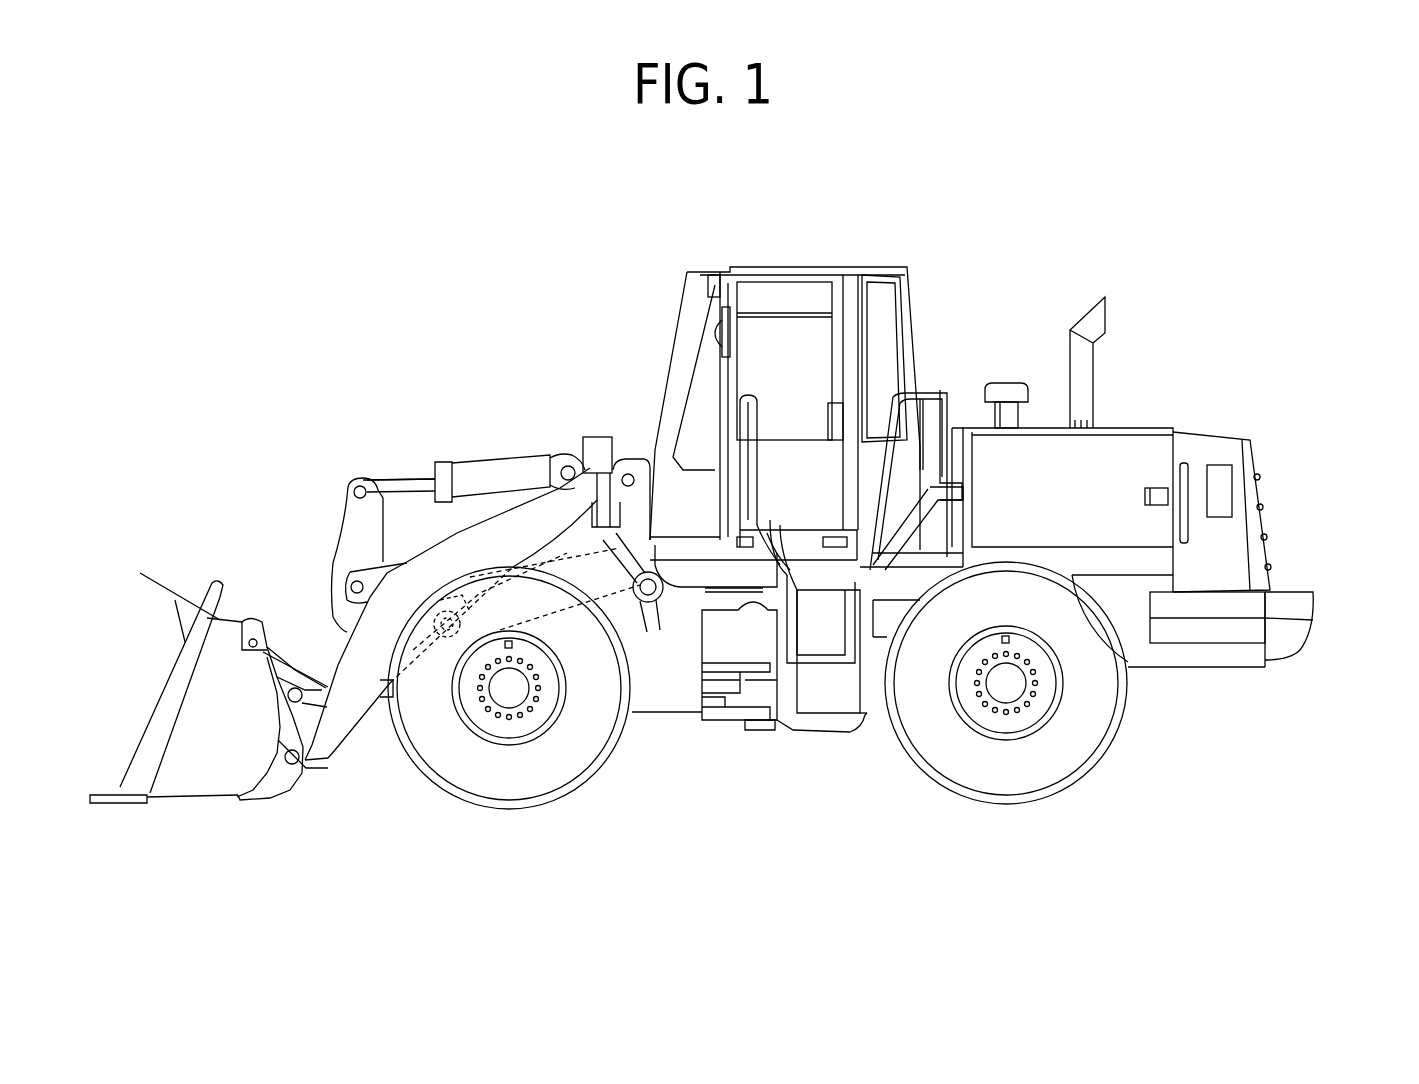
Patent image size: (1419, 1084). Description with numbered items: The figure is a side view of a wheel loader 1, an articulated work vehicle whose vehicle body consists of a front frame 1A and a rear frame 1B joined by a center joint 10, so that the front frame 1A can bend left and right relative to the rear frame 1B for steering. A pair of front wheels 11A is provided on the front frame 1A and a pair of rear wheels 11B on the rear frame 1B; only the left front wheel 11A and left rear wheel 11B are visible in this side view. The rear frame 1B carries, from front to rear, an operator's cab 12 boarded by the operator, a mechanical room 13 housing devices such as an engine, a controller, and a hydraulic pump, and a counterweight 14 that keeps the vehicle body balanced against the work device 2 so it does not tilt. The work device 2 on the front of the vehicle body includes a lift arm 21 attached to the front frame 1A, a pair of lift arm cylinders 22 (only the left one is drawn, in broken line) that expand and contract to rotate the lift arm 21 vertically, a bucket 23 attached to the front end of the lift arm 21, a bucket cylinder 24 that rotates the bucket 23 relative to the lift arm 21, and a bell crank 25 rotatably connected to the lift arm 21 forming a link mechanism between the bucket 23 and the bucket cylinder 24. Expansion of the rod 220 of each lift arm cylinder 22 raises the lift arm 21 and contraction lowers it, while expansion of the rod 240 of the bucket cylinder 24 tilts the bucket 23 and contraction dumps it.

The wheel loader 1 is at (292, 273).
The front frame 1A is at (492, 342).
The rear frame 1B is at (1012, 270).
The work device 2 is at (325, 818).
The center joint 10 is at (745, 737).
The front wheels 11A is at (547, 778).
The rear wheels 11B is at (1000, 784).
The operator's cab 12 is at (697, 298).
The mechanical room 13 is at (1142, 440).
The counterweight 14 is at (1285, 608).
The lift arm 21 is at (360, 690).
The lift arm cylinders 22 is at (565, 618).
The rod 220 is at (463, 628).
The bucket 23 is at (190, 775).
The bucket cylinder 24 is at (476, 476).
The rod 240 is at (395, 482).
The bell crank 25 is at (347, 553).